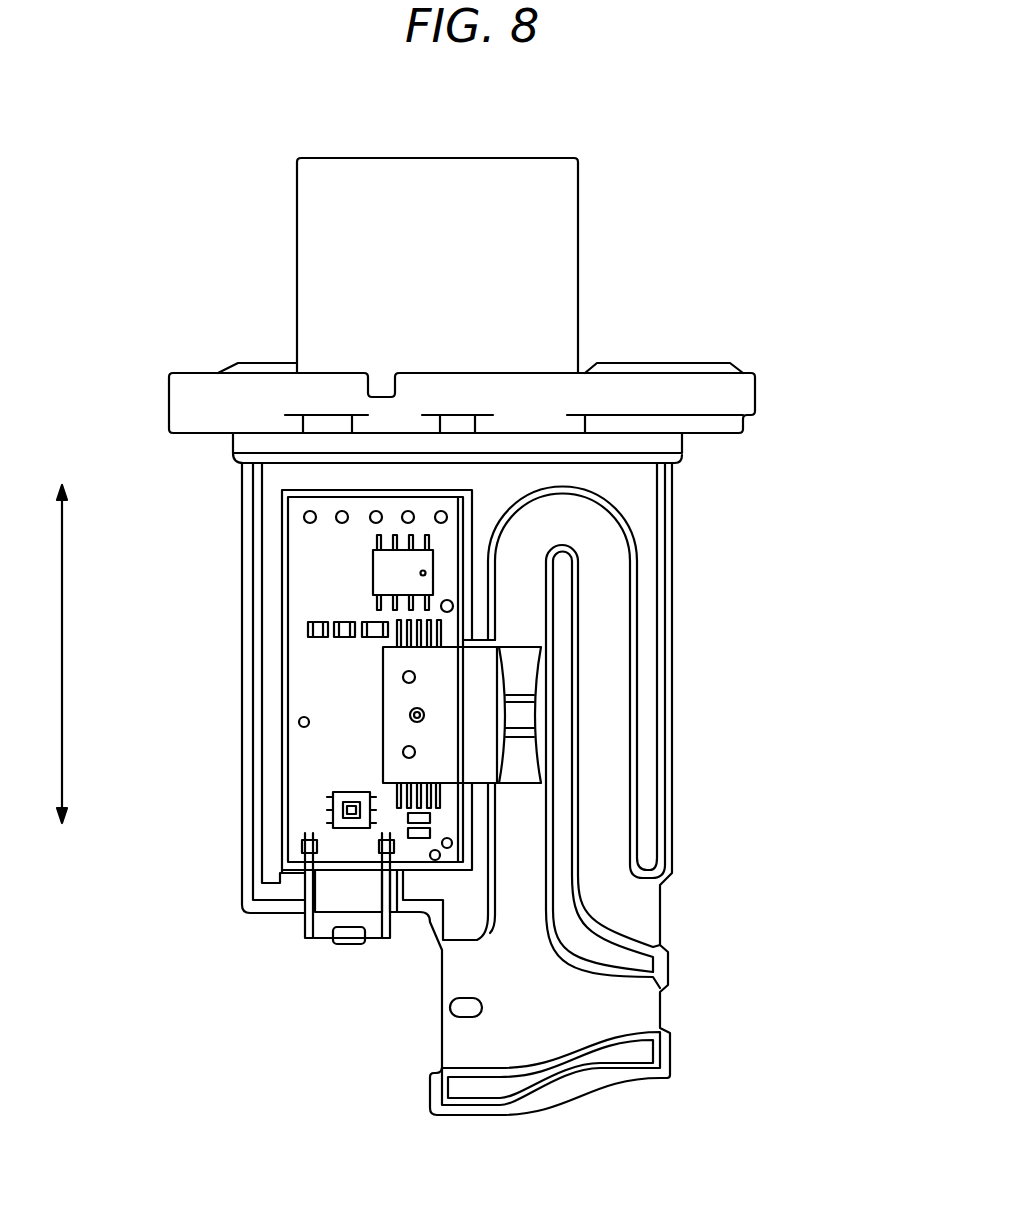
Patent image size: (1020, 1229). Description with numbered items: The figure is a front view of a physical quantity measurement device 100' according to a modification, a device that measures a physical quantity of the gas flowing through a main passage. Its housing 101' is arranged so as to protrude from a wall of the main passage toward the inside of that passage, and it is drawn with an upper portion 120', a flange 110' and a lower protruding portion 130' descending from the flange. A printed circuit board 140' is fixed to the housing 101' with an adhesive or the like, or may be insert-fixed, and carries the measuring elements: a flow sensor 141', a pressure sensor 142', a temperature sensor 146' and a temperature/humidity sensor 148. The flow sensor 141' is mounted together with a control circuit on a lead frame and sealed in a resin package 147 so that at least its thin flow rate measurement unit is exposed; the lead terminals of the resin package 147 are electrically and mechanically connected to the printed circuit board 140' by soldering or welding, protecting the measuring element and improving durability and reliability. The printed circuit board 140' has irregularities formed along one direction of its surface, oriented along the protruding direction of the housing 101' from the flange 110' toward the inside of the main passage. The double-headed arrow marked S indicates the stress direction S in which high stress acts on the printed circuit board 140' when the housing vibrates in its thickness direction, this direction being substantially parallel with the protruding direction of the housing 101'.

The physical quantity measurement device 100' is at (477, 605).
The housing 101' is at (541, 636).
The upper housing 120' is at (569, 265).
The flange 110' is at (505, 398).
The lower housing 130' is at (537, 774).
The printed circuit board 140' is at (319, 681).
The flow sensor 141' is at (624, 715).
The pressure sensor 142' is at (300, 572).
The temperature sensor 146' is at (345, 919).
The resin package 147 is at (400, 770).
The temperature/humidity sensor 148 is at (345, 808).
The stress direction S is at (54, 654).